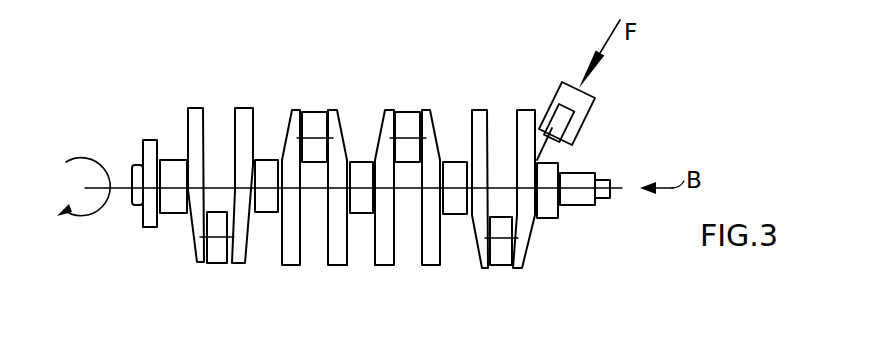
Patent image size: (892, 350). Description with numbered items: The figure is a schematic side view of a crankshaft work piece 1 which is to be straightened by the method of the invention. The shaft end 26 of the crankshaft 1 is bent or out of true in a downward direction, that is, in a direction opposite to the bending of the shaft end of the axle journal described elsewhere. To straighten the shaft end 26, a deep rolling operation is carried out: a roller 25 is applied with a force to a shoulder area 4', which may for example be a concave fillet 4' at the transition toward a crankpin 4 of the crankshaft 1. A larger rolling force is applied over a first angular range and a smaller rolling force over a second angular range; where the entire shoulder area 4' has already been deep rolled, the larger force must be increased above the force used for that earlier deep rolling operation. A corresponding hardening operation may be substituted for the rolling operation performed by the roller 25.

The crankshaft work piece 1 is at (340, 194).
The shoulder area 4' is at (180, 241).
The crankpin 4 is at (523, 241).
The roller 25 is at (558, 155).
The shaft end 26 is at (585, 238).